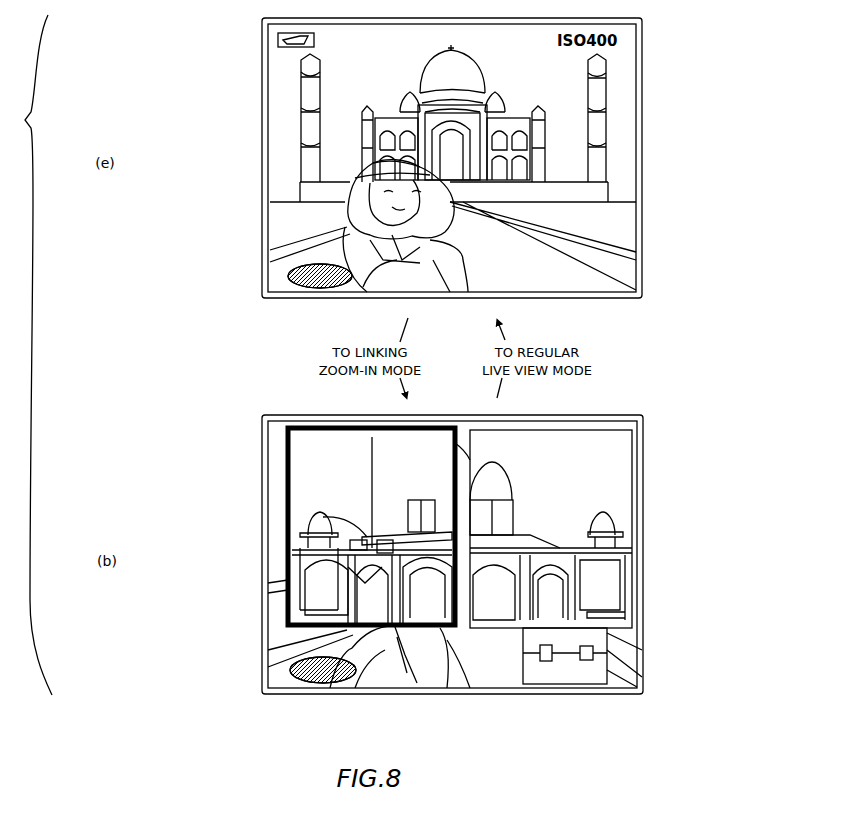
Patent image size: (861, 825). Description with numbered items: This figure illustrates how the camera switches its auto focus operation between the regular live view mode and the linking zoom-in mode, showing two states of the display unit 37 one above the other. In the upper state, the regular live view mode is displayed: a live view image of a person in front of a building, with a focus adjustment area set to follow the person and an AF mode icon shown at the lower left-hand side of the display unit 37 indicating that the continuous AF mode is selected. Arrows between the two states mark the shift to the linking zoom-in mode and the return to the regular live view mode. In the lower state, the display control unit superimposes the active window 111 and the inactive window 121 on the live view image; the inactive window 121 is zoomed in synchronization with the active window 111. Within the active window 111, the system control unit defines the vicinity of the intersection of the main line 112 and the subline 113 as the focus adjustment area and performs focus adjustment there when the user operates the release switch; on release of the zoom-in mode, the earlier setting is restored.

The display unit 37 is at (645, 54).
The active window 111 is at (290, 428).
The main line 112 is at (345, 588).
The subline 113 is at (367, 470).
The inactive window 121 is at (616, 430).